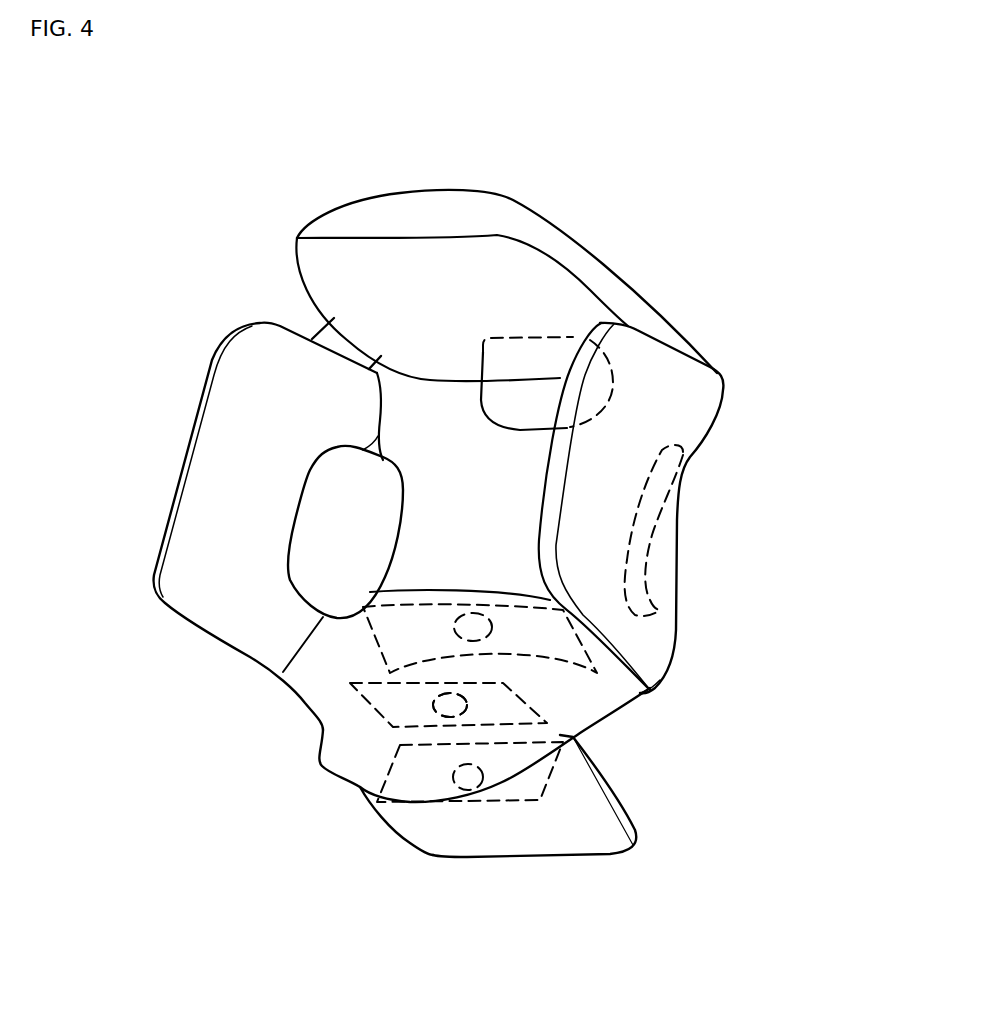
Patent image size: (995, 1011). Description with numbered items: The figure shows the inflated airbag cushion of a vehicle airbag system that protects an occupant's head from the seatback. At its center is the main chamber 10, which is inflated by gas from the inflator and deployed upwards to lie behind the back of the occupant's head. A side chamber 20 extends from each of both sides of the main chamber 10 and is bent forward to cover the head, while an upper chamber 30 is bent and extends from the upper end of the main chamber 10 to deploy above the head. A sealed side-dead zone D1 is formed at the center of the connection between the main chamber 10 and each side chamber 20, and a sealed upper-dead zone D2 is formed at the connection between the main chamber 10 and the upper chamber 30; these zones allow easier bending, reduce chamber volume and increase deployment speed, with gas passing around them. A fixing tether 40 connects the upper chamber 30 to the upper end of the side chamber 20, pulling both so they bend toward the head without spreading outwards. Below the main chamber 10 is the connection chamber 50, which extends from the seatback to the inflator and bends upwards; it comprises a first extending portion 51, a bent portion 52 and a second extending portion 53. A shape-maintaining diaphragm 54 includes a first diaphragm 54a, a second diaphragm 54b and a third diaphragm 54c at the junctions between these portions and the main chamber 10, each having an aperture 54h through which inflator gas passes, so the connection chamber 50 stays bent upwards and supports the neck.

The main chamber 10 is at (465, 492).
The side chamber 20 is at (243, 410).
The upper chamber 30 is at (543, 227).
The fixing tether 40 is at (325, 335).
The side-dead zone D1 is at (333, 514).
The upper-dead zone D2 is at (525, 405).
The connection chamber 50 is at (513, 863).
The first extending portion 51 is at (575, 837).
The bent portion 52 is at (350, 753).
The second extending portion 53 is at (557, 673).
The shape-maintaining diaphragm 54 is at (418, 780).
The first diaphragm 54a is at (460, 823).
The second diaphragm 54b is at (527, 703).
The third diaphragm 54c is at (373, 632).
The aperture 54h is at (437, 707).